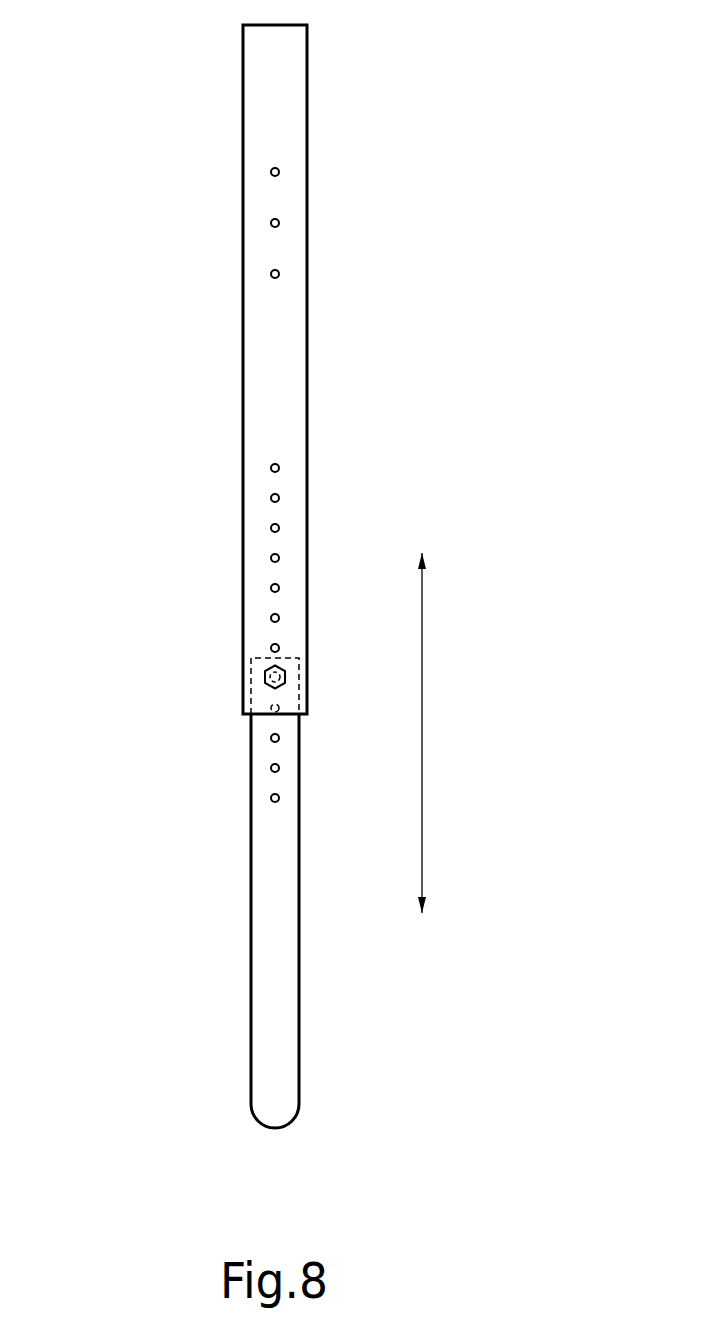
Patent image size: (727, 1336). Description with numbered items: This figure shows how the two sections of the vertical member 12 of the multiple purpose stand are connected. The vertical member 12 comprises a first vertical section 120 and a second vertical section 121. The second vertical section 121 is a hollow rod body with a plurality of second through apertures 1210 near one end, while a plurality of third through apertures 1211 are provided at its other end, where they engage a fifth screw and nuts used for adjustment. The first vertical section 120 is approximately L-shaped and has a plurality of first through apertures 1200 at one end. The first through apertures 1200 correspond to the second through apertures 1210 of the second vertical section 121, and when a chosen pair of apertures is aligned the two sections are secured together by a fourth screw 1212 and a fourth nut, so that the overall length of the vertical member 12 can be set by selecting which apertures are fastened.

The vertical member 12 is at (334, 576).
The second vertical section 121 is at (270, 369).
The third through apertures 1211 is at (279, 169).
The second through apertures 1210 is at (281, 496).
The fourth screw 1212 is at (263, 677).
The first vertical section 120 is at (179, 893).
The first through apertures 1200 is at (270, 767).